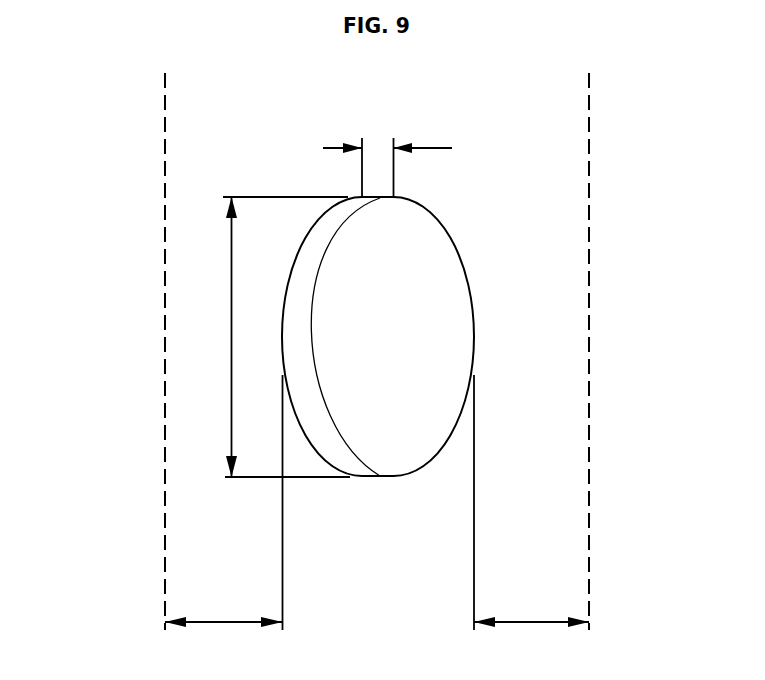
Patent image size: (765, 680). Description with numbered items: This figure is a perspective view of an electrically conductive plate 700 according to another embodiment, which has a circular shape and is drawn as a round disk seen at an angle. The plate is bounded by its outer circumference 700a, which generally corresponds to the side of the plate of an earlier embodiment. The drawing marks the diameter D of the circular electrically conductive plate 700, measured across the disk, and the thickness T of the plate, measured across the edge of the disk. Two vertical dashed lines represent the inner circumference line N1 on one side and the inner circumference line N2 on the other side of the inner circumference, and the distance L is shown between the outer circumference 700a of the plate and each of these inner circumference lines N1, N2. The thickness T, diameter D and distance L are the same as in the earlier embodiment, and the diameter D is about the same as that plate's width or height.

The electrically conductive plate 700 is at (410, 460).
The outer circumference 700a is at (337, 457).
The inner circumference line N1 is at (165, 327).
The inner circumference line N2 is at (589, 325).
The diameter D is at (277, 337).
The thickness T is at (387, 156).
The distance L is at (377, 640).